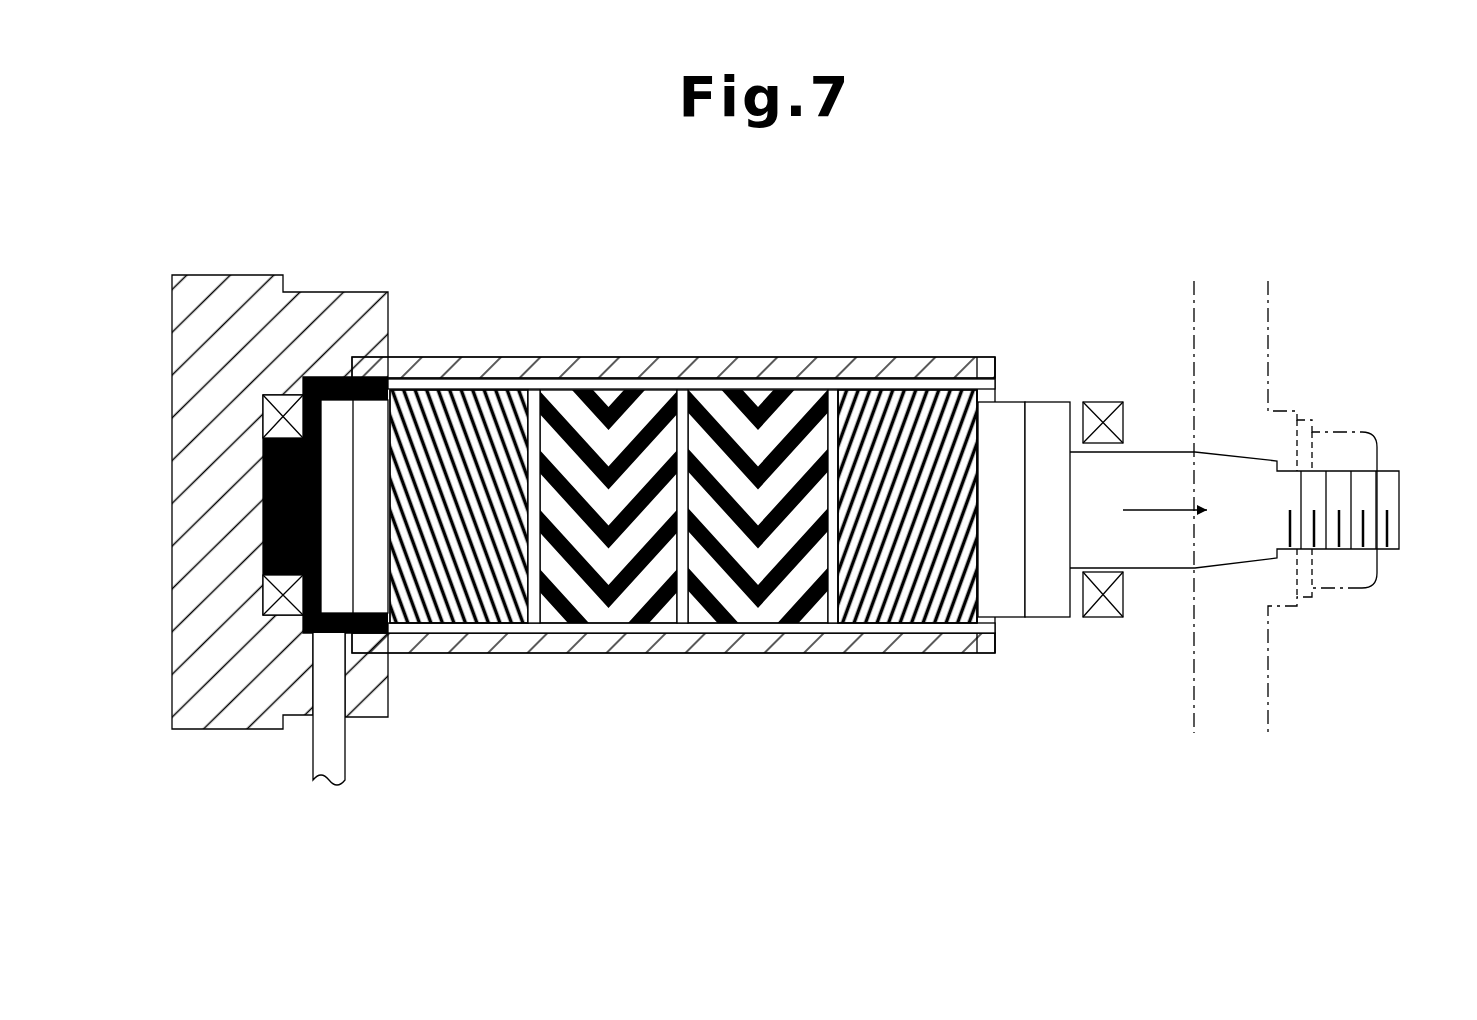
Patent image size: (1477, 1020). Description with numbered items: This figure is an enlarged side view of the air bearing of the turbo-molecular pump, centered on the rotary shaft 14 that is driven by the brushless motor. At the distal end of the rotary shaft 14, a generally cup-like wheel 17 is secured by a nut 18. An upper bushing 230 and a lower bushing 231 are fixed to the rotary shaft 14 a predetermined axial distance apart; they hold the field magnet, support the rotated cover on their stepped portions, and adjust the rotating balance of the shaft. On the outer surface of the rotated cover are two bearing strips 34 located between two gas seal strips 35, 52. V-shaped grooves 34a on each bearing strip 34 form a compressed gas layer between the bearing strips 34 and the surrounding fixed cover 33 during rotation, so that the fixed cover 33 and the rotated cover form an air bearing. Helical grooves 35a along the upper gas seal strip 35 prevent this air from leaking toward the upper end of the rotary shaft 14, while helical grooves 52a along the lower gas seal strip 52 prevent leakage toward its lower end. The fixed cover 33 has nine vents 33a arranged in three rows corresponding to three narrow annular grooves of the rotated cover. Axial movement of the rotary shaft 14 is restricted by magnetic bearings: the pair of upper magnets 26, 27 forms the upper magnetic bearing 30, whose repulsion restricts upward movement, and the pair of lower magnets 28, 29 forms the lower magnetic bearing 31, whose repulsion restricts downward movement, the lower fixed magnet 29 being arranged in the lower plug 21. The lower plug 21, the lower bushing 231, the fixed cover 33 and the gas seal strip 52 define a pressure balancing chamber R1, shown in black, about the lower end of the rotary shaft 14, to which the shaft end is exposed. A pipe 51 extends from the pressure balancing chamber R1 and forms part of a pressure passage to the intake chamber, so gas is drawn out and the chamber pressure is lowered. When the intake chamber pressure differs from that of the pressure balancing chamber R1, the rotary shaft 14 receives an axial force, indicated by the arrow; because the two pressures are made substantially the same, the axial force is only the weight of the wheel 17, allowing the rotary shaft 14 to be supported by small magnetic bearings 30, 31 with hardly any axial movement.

The rotary shaft 14 is at (1160, 452).
The wheel 17 is at (1268, 318).
The nut 18 is at (1377, 440).
The lower plug 21 is at (243, 718).
The upper magnet 26 is at (1042, 402).
The upper magnet 27 is at (1103, 402).
The lower magnet 28 is at (334, 412).
The lower fixed magnet 29 is at (283, 398).
The upper magnetic bearing 30 is at (1122, 350).
The lower magnetic bearing 31 is at (272, 230).
The fixed cover 33 is at (898, 380).
The vents 33a is at (533, 388).
The bearing strips 34 is at (655, 616).
The V-shaped grooves 34a is at (640, 398).
The gas seal strip 35 is at (900, 614).
The helical grooves 35a is at (975, 630).
The pipe 51 is at (349, 766).
The gas seal strip 52 is at (484, 618).
The helical grooves 52a is at (418, 636).
The upper bushing 230 is at (1010, 402).
The lower bushing 231 is at (380, 414).
The pressure balancing chamber R1 is at (258, 532).